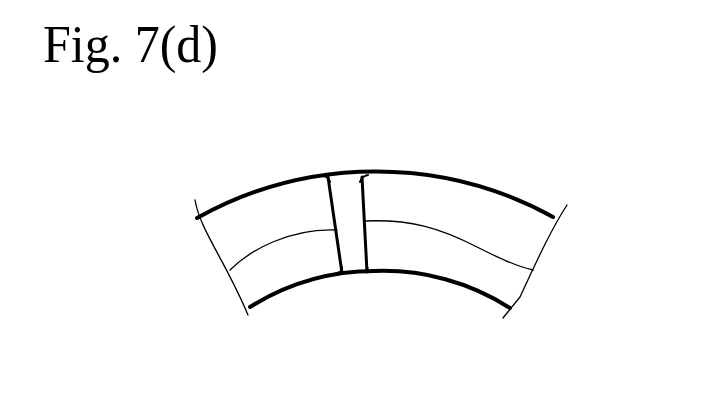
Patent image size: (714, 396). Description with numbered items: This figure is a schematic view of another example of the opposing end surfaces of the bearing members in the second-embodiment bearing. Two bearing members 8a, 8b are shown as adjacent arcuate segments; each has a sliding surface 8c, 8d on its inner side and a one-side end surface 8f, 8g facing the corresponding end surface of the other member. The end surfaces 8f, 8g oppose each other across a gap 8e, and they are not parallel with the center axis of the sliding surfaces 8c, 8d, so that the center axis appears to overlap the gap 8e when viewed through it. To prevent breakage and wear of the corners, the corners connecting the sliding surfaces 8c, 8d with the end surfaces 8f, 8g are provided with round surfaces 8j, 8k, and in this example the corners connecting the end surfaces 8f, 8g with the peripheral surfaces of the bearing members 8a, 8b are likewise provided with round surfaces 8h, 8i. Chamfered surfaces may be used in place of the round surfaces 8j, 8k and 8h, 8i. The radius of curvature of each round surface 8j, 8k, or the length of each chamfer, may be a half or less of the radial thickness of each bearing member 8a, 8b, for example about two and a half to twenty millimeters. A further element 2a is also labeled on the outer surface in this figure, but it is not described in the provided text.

The outer surface of main body 2a is at (445, 178).
The bearing member 8a is at (242, 213).
The bearing member 8b is at (518, 215).
The sliding surface 8c is at (280, 293).
The sliding surface 8d is at (470, 289).
The gap 8e is at (345, 187).
The end surface 8f is at (232, 269).
The end surface 8g is at (533, 272).
The round surface 8h is at (332, 176).
The round surface 8i is at (363, 173).
The round surface 8j is at (347, 278).
The round surface 8k is at (366, 276).